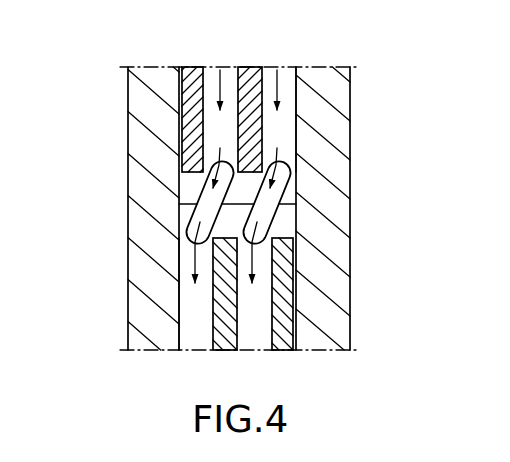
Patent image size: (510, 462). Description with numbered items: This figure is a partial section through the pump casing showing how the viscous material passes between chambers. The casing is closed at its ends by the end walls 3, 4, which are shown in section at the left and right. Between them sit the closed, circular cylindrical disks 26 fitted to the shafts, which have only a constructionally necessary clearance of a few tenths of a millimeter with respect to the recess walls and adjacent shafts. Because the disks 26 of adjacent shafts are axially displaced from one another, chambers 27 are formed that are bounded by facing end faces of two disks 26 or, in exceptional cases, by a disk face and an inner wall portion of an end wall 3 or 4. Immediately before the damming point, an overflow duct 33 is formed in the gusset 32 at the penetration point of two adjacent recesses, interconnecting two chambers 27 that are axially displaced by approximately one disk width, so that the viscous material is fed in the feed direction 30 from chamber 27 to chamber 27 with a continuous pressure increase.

The end wall 3 is at (155, 327).
The end wall 4 is at (328, 327).
The disk 26 is at (188, 113).
The chamber 27 is at (283, 131).
The feed direction 30 is at (219, 95).
The gusset 32 is at (278, 227).
The overflow duct 33 is at (188, 225).